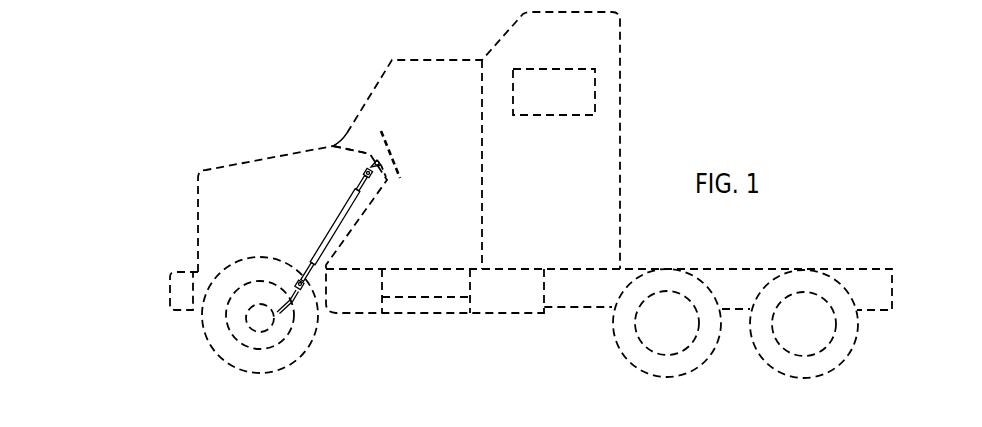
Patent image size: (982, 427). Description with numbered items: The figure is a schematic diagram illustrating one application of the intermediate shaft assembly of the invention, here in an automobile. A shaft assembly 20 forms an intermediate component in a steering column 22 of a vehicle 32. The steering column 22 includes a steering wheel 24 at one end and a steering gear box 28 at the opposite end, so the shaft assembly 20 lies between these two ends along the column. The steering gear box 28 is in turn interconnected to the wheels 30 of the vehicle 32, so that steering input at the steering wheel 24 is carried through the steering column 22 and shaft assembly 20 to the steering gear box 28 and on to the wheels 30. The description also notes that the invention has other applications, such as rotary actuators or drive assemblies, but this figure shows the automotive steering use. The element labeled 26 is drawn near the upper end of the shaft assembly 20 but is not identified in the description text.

The shaft assembly 20 is at (320, 196).
The steering column 22 is at (344, 162).
The steering wheel 24 is at (381, 133).
The upper pivot connection 26 is at (374, 182).
The steering gear box 28 is at (306, 282).
The wheels 30 is at (295, 352).
The vehicle 32 is at (293, 106).